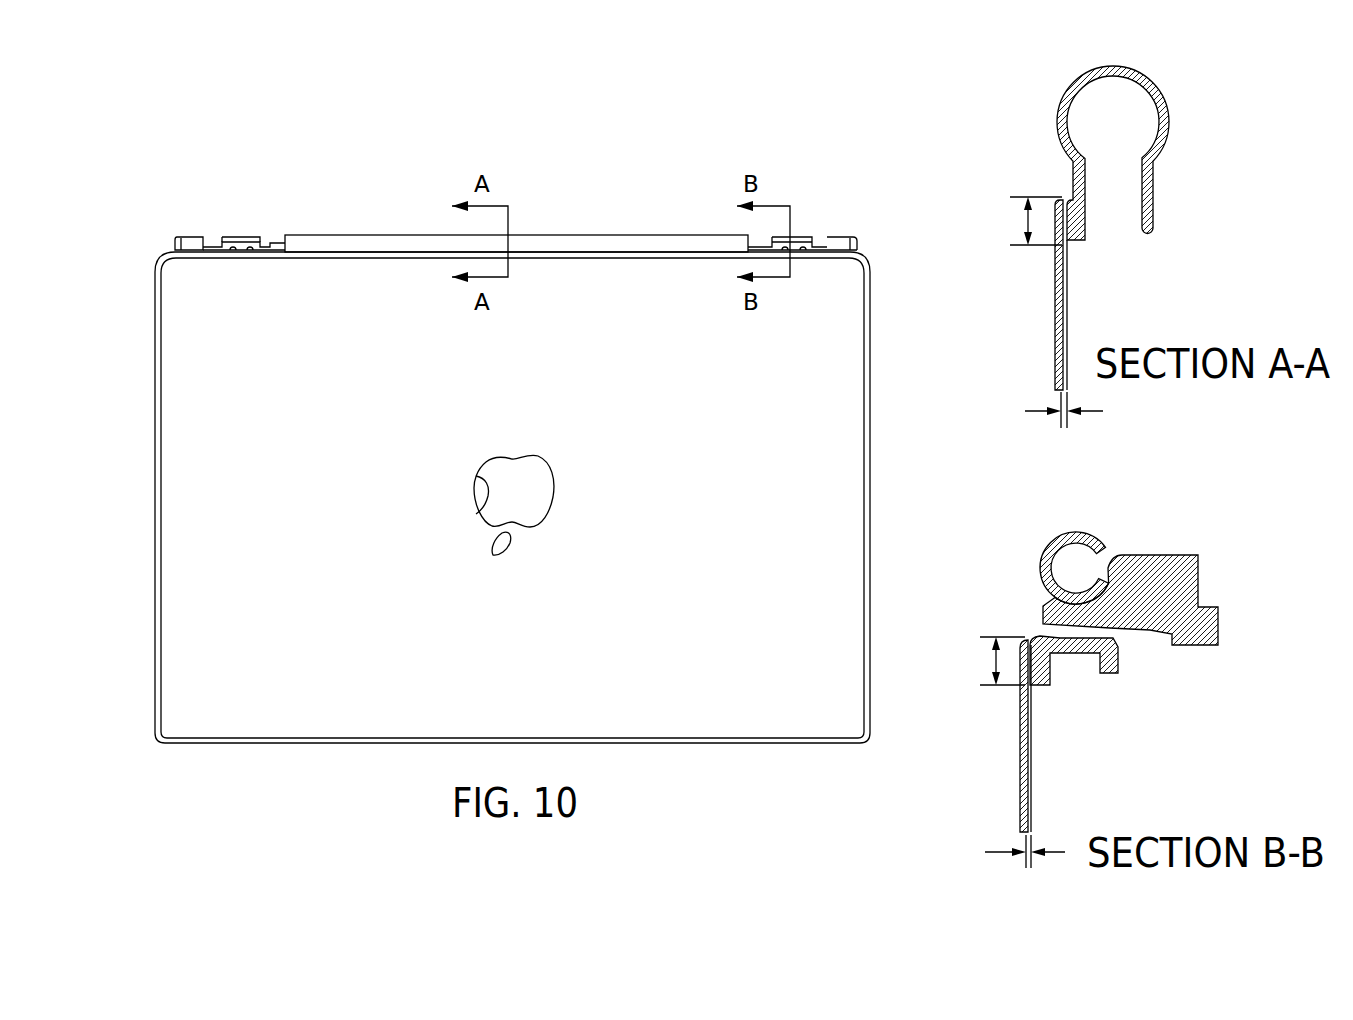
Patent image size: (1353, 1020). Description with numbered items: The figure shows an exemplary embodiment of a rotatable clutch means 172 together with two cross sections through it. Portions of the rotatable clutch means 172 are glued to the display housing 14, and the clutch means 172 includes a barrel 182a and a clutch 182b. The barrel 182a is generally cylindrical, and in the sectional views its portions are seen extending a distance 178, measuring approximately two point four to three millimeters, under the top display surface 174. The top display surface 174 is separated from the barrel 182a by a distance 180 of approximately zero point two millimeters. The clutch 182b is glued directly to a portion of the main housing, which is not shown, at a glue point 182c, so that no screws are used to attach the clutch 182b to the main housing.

The display housing 14 is at (661, 467).
The rotatable clutch means 172 is at (800, 226).
The top display surface 174 is at (1055, 340).
The distance 178 is at (1020, 222).
The distance 180 is at (1040, 411).
The barrel 182a is at (593, 243).
The clutch 182b is at (815, 231).
The glue point 182c is at (1200, 648).